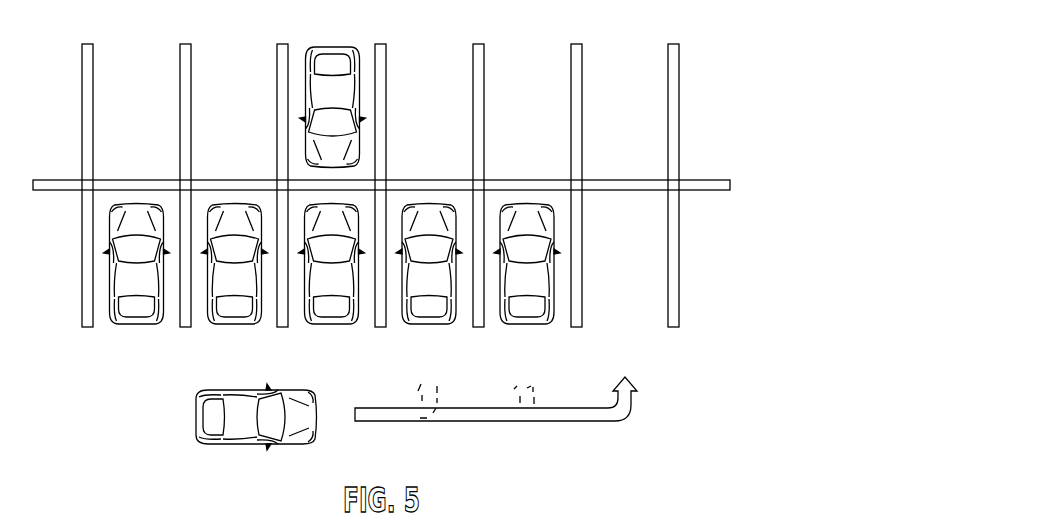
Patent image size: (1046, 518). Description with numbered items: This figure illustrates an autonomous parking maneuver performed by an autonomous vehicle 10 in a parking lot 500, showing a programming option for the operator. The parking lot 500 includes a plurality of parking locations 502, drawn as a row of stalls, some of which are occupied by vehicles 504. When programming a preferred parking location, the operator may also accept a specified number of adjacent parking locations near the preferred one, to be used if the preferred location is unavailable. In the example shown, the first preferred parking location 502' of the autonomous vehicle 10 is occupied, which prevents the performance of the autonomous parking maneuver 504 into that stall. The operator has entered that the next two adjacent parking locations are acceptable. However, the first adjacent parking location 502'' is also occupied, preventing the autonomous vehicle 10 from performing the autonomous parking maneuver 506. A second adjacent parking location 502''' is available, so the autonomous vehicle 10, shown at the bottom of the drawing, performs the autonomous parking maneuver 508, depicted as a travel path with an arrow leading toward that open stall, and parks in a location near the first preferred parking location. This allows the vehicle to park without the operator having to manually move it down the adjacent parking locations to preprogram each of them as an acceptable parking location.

The parking lot 500 is at (402, 163).
The parking locations 502 is at (136, 185).
The first preferred parking location 502' is at (418, 185).
The first adjacent parking location 502'' is at (538, 185).
The second adjacent parking location 502''' is at (638, 185).
The autonomous parking maneuver 504 is at (340, 90).
The autonomous parking maneuver 506 is at (530, 383).
The autonomous parking maneuver 508 is at (637, 388).
The autonomous vehicle 10 is at (250, 418).